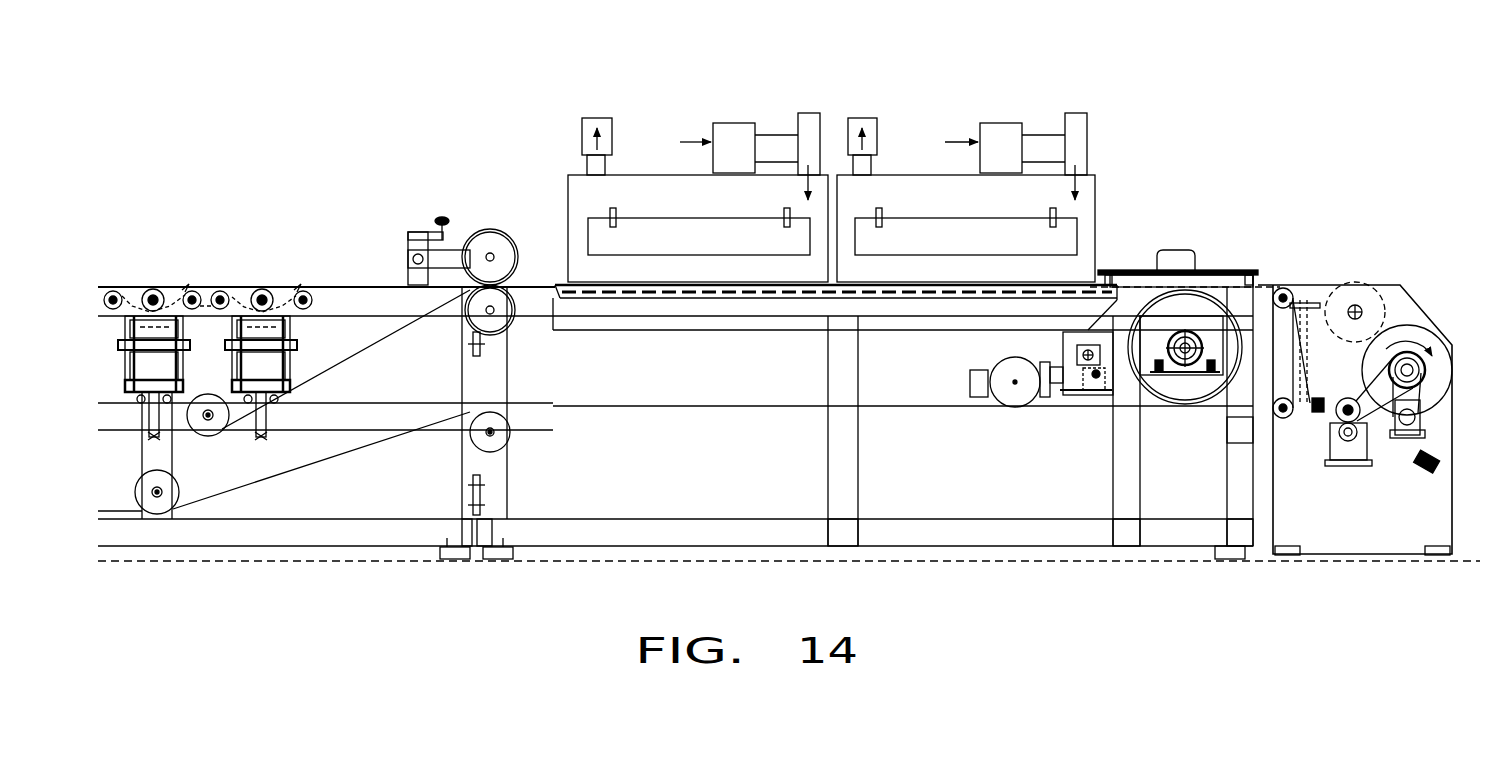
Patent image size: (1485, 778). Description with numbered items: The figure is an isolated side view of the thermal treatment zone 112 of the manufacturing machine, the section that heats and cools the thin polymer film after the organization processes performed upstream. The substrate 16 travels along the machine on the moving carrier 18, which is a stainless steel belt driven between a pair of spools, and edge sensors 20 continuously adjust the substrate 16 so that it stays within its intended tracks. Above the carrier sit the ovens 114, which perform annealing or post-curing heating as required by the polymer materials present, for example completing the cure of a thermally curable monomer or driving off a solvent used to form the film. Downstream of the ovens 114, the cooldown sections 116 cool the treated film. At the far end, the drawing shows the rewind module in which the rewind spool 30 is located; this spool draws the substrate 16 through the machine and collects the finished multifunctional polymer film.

The substrate 16 is at (357, 287).
The moving carrier 18 is at (530, 290).
The edge sensors 20 is at (1198, 405).
The rewind spool 30 is at (1413, 327).
The thermal treatment zone 112 is at (731, 108).
The ovens 114 is at (583, 197).
The cooldown sections 116 is at (1226, 260).